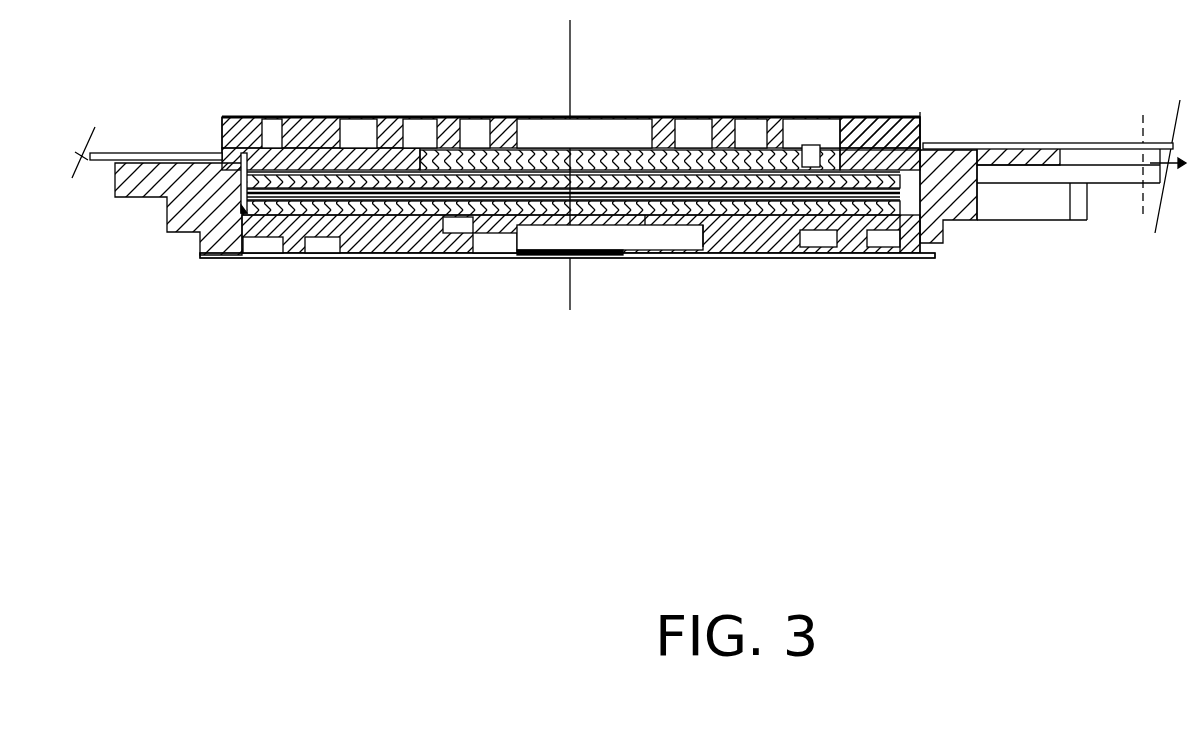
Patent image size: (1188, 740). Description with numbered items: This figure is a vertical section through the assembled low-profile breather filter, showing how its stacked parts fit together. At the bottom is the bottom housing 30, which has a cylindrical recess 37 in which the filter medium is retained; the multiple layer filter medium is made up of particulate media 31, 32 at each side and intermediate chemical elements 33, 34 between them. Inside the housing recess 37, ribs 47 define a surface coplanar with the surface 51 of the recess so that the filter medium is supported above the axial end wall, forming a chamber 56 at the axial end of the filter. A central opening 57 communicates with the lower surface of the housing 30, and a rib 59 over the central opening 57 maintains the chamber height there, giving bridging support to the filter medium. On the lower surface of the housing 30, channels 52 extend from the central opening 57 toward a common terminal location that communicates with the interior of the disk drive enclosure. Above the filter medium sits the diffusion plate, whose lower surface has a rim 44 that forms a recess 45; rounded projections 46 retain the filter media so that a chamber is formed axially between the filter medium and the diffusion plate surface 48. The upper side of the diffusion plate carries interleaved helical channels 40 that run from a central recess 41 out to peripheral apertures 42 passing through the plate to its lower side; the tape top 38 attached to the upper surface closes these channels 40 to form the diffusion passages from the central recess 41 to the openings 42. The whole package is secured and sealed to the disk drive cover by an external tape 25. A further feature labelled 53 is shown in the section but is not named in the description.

The external tape 25 is at (160, 156).
The bottom housing 30 is at (158, 207).
The particulate media 31 is at (357, 182).
The particulate media 32 is at (373, 207).
The chemical element 33 is at (650, 185).
The chemical element 34 is at (760, 200).
The recess 37 is at (887, 227).
The tape top 38 is at (878, 130).
The helical channels 40 is at (748, 124).
The central recess 41 is at (607, 124).
The peripheral apertures 42 is at (827, 137).
The rim 44 is at (928, 152).
The recess 45 is at (892, 112).
The rounded projections 46 is at (317, 173).
The ribs 47 is at (440, 216).
The diffusion plate surface 48 is at (507, 168).
The surface 51 is at (240, 205).
The channels 52 is at (317, 248).
The bar 53 is at (517, 228).
The chamber 56 is at (670, 213).
The central opening 57 is at (593, 233).
The rib 59 is at (487, 220).